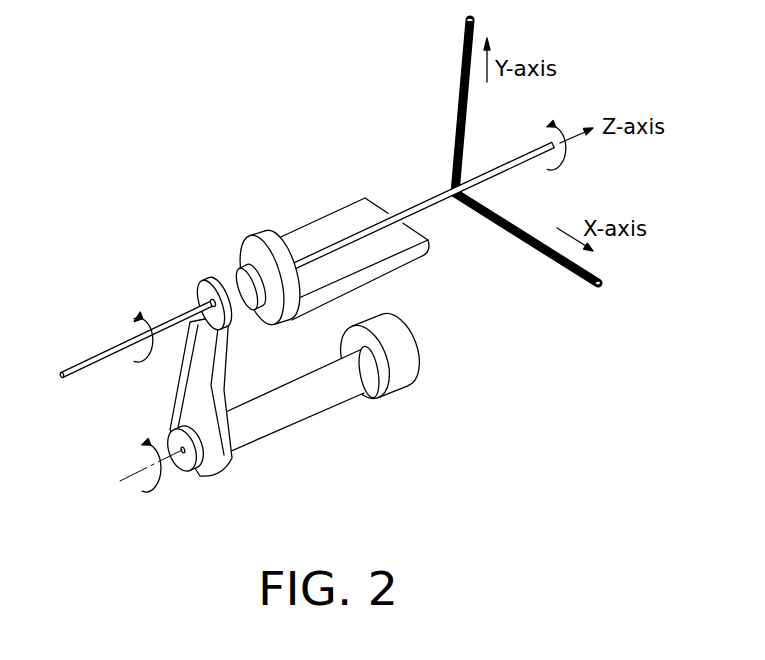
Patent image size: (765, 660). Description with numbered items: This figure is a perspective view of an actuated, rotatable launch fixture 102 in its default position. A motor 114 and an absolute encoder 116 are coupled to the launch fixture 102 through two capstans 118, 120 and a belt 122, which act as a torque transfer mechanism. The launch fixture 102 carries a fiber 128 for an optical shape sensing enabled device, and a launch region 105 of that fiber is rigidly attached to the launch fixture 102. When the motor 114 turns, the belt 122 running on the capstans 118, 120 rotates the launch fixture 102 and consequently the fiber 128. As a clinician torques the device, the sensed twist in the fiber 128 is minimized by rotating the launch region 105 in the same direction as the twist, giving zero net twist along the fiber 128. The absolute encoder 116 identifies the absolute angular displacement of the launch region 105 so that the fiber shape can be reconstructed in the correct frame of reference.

The launch fixture 102 is at (300, 216).
The launch region 105 is at (395, 214).
The motor 114 is at (310, 417).
The absolute encoder 116 is at (400, 401).
The capstan 118 is at (197, 293).
The capstan 120 is at (182, 472).
The belt 122 is at (183, 377).
The fiber 128 is at (83, 363).